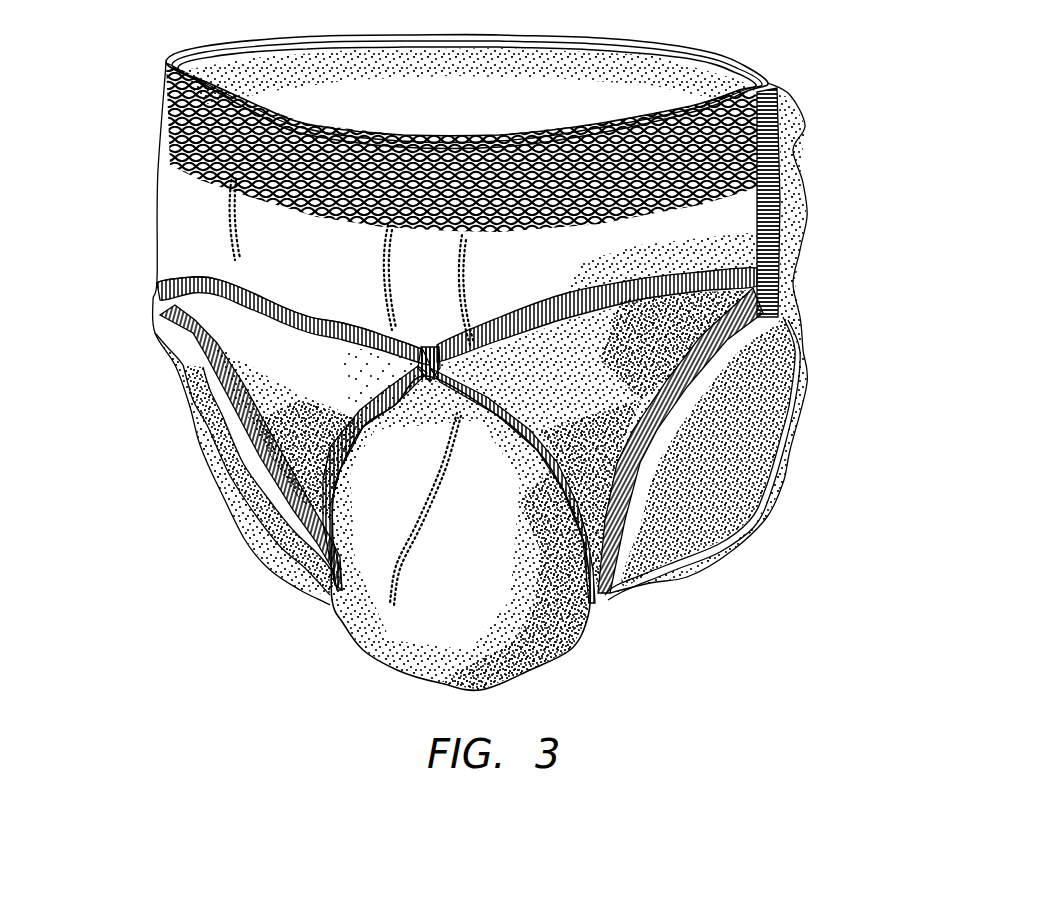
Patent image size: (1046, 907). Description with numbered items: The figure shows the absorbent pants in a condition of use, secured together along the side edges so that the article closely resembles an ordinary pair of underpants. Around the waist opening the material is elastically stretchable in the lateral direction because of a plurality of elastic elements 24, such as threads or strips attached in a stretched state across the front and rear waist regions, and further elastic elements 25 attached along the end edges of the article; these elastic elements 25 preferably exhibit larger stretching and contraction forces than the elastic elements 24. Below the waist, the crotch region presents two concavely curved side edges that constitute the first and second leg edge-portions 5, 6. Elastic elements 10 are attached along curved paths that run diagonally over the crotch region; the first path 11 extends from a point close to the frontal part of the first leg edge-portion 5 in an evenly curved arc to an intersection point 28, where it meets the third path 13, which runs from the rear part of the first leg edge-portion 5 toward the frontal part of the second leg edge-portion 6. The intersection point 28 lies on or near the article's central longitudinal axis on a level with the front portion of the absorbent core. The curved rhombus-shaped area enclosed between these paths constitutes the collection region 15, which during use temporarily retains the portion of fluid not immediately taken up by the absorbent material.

The first leg edge-portion 5 is at (673, 427).
The second leg edge-portion 6 is at (233, 474).
The elastic elements 10 is at (192, 320).
The first path 11 is at (297, 303).
The third path 13 is at (773, 213).
The collection region 15 is at (398, 607).
The elastic elements 24 is at (183, 123).
The elastic elements 25 is at (717, 63).
The intersection point 28 is at (423, 343).